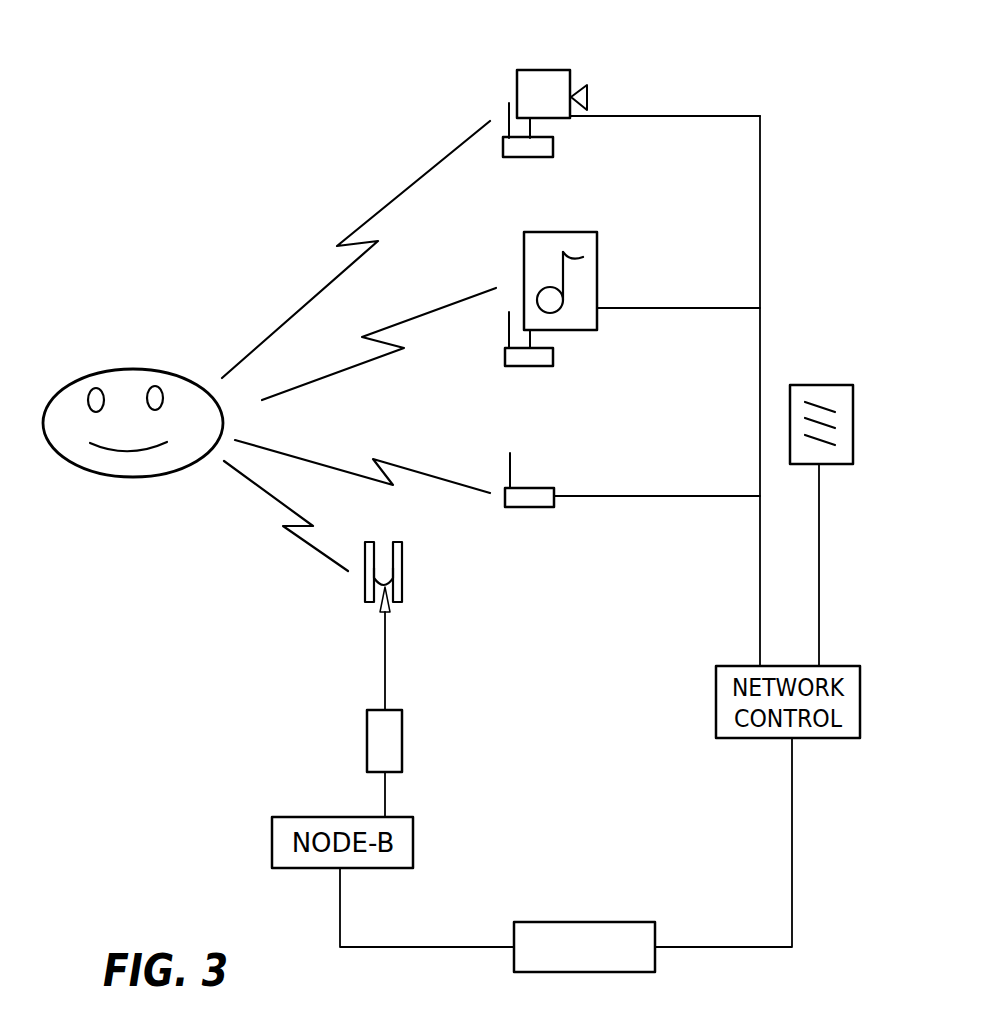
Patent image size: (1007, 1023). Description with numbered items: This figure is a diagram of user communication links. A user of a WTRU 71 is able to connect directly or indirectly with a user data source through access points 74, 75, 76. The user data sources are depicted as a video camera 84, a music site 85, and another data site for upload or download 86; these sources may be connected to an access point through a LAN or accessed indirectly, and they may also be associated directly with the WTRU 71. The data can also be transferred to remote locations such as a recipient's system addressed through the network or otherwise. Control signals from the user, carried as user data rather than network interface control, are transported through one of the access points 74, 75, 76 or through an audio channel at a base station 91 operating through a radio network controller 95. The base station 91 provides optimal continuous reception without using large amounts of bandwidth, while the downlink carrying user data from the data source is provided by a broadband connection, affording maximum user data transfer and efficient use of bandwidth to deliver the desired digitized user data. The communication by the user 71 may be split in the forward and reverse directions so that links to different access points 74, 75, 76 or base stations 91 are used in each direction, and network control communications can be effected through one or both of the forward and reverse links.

The WTRU 71 is at (101, 370).
The access point 74 is at (553, 146).
The access point 75 is at (553, 355).
The access point 76 is at (552, 488).
The video camera 84 is at (548, 70).
The music site 85 is at (600, 247).
The data site for upload or download 86 is at (818, 383).
The base station 91 is at (402, 741).
The radio network controller 95 is at (572, 921).